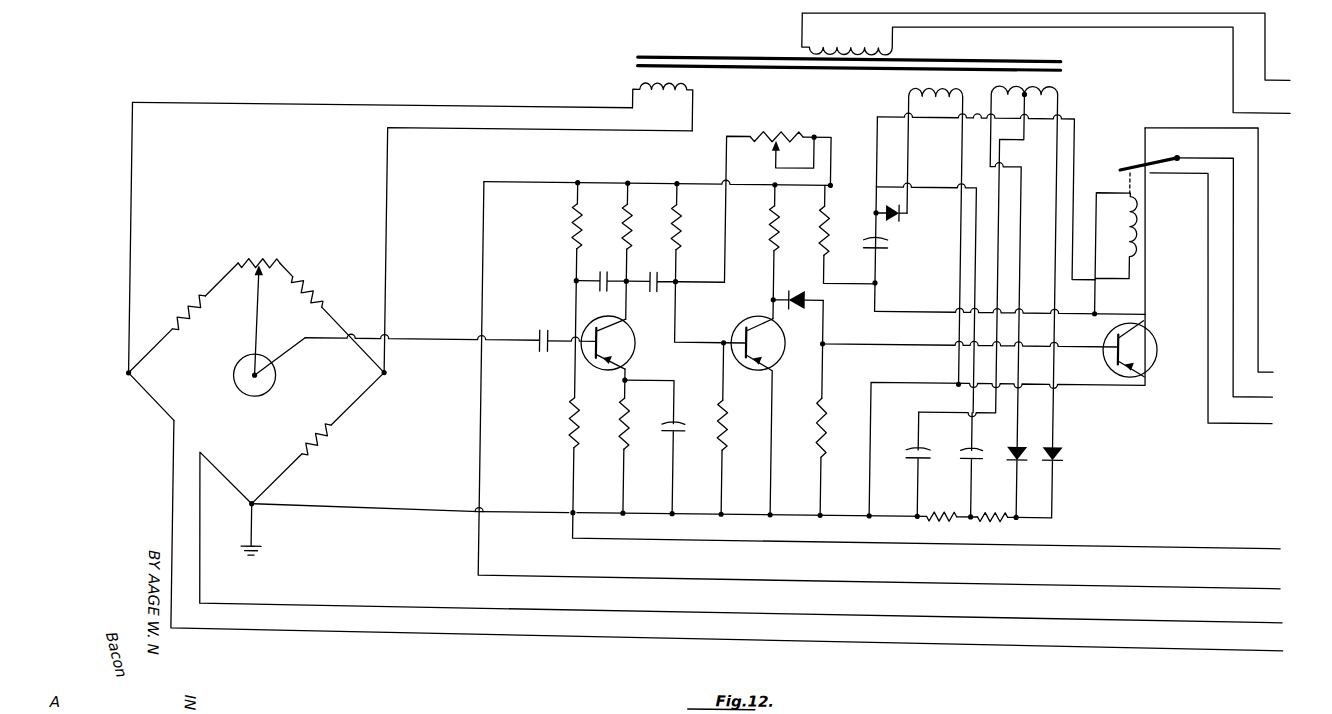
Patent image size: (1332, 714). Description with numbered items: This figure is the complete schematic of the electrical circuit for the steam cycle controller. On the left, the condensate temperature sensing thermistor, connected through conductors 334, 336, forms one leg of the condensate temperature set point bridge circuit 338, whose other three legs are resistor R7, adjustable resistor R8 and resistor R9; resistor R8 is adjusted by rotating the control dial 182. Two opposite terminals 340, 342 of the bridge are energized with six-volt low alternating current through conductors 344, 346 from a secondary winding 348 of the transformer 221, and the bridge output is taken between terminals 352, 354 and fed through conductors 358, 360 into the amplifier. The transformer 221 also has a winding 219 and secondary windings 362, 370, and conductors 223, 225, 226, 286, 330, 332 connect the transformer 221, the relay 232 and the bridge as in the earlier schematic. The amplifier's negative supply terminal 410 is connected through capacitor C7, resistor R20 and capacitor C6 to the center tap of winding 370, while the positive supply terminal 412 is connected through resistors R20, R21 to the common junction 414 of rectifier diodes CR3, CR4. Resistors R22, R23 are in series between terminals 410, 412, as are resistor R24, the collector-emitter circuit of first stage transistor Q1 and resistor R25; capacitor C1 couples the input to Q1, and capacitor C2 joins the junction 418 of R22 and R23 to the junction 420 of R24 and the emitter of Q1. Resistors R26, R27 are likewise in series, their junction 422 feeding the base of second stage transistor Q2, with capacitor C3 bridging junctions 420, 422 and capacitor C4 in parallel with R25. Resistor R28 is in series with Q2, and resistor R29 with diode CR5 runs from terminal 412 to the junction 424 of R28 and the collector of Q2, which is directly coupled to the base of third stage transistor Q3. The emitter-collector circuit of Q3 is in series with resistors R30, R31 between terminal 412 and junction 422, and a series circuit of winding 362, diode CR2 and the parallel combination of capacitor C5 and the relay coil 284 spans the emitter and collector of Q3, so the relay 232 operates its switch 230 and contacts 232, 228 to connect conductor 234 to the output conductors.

The bridge terminal 340 is at (129, 379).
The conductor 344 is at (335, 108).
The conductor 346 is at (384, 177).
The secondary winding 348 is at (672, 96).
The resistor R7 is at (176, 320).
The adjustable resistor R8 is at (304, 288).
The condensate temperature set point bridge circuit 338 is at (217, 283).
The control dial 182 is at (233, 380).
The bridge output terminal 354 is at (262, 390).
The bridge terminal 342 is at (388, 379).
The conductor 358 is at (427, 342).
The conductor 336 is at (175, 478).
The resistor R9 is at (333, 440).
The bridge output terminal 352 is at (258, 511).
The conductor 360 is at (347, 506).
The conductor 334 is at (203, 563).
The negative supply terminal 410 is at (575, 184).
The positive supply terminal 412 is at (790, 513).
The conductor 330 is at (1098, 541).
The conductor 332 is at (1066, 581).
The resistor R22 is at (570, 222).
The resistor R23 is at (568, 415).
The resistor R24 is at (620, 222).
The resistor R25 is at (615, 430).
The resistor R26 is at (679, 228).
The resistor R27 is at (730, 418).
The resistor R28 is at (766, 228).
The resistor R29 is at (817, 422).
The resistor R30 is at (828, 232).
The resistor R31 is at (778, 132).
The capacitor C1 is at (537, 332).
The capacitor C2 is at (597, 276).
The capacitor C3 is at (648, 276).
The capacitor C4 is at (670, 422).
The common junction 420 is at (627, 285).
The common junction 422 is at (676, 285).
The first stage amplifier transistor Q1 is at (632, 343).
The second stage amplifier transistor Q2 is at (782, 352).
The third stage amplifier transistor Q3 is at (1155, 355).
The diode CR5 is at (800, 291).
The common junction 424 is at (836, 343).
The transformer 221 is at (924, 50).
The transformer winding 219 is at (851, 36).
The conductor 223 is at (1107, 10).
The conductor 225 is at (1228, 60).
The secondary winding 362 is at (903, 93).
The secondary transformer winding 370 is at (1056, 93).
The diode CR2 is at (900, 216).
The capacitor C5 is at (882, 250).
The relay coil 284 is at (1148, 168).
The relay switch 230 is at (1145, 146).
The relay 232 is at (1137, 152).
The relay contact 228 is at (1168, 153).
The conductor 234 is at (1256, 262).
The conductor 226 is at (1256, 366).
The conductor 286 is at (1230, 422).
The capacitor C6 is at (910, 470).
The capacitor C7 is at (962, 470).
The rectifier diode CR3 is at (1012, 444).
The rectifier diode CR4 is at (1052, 444).
The resistor R20 is at (929, 520).
The resistor R21 is at (995, 520).
The common junction 418 is at (918, 512).
The common junction 414 is at (1018, 512).